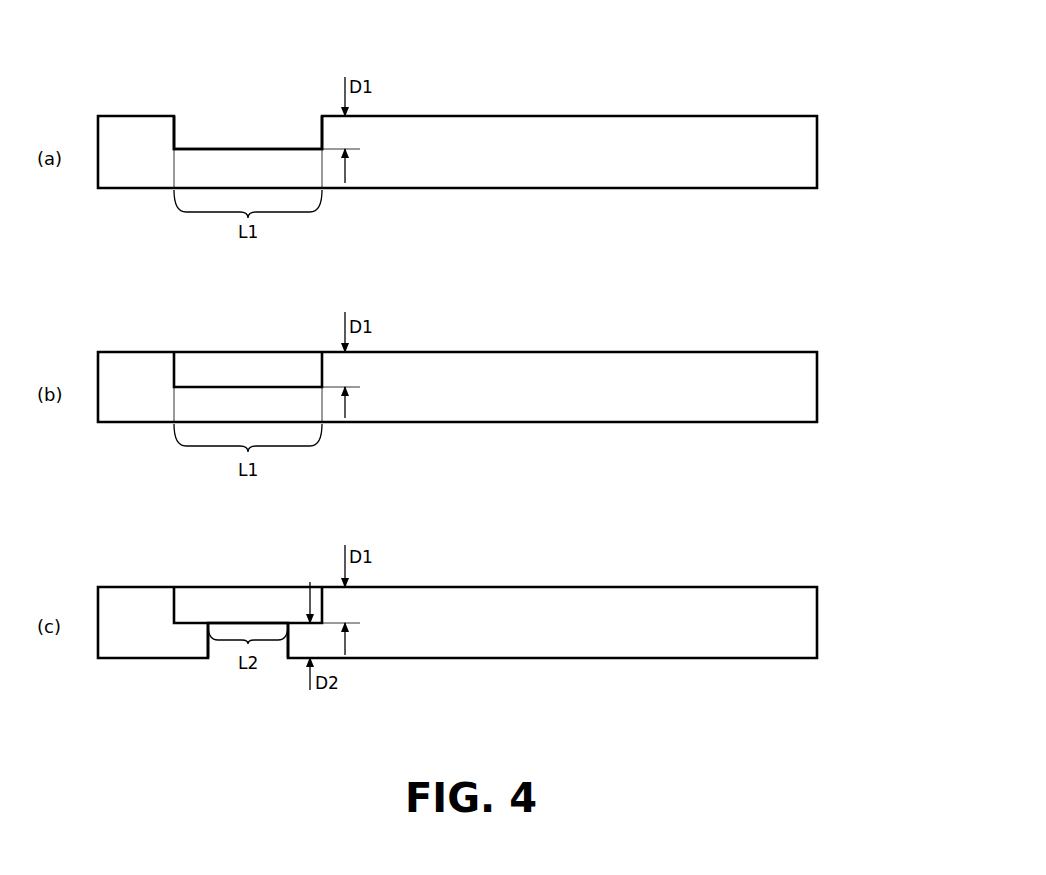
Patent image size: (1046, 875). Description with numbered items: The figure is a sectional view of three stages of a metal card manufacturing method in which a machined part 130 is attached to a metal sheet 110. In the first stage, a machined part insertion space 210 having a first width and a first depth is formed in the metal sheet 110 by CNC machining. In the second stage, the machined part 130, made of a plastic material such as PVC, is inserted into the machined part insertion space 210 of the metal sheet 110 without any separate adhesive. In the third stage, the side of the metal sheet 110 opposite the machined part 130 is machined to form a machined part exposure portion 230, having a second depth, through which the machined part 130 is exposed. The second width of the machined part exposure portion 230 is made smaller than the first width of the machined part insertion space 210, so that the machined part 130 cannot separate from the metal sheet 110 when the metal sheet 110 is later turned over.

The metal sheet 110 is at (817, 152).
The machined part insertion space 210 is at (243, 128).
The machined part 130 is at (258, 368).
The machined part exposure portion 230 is at (222, 655).